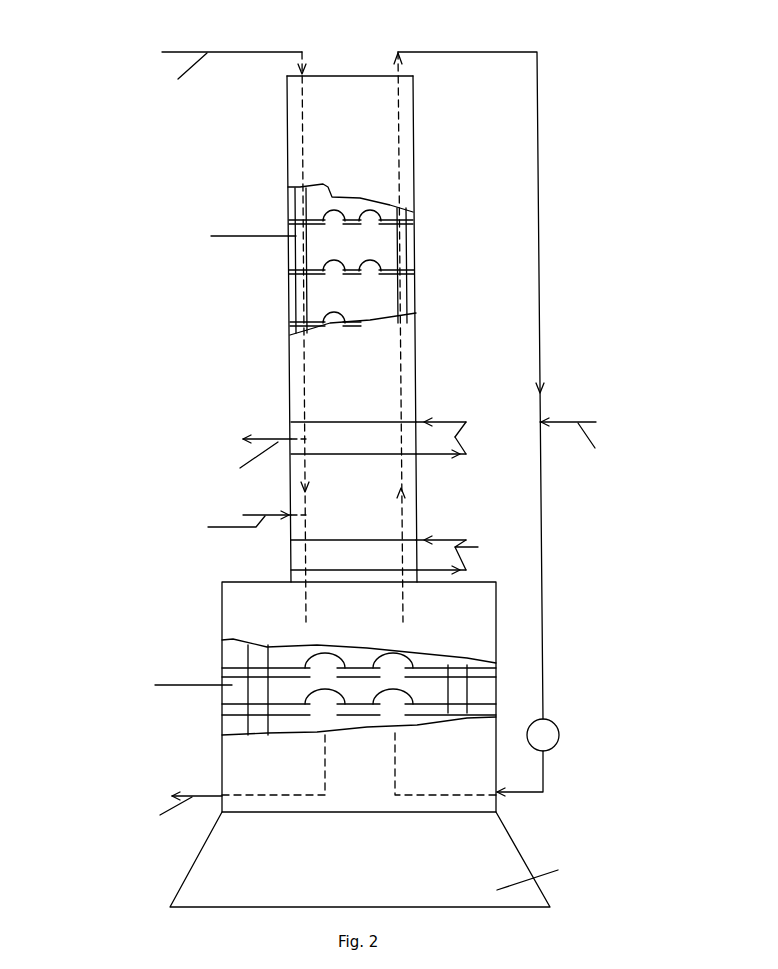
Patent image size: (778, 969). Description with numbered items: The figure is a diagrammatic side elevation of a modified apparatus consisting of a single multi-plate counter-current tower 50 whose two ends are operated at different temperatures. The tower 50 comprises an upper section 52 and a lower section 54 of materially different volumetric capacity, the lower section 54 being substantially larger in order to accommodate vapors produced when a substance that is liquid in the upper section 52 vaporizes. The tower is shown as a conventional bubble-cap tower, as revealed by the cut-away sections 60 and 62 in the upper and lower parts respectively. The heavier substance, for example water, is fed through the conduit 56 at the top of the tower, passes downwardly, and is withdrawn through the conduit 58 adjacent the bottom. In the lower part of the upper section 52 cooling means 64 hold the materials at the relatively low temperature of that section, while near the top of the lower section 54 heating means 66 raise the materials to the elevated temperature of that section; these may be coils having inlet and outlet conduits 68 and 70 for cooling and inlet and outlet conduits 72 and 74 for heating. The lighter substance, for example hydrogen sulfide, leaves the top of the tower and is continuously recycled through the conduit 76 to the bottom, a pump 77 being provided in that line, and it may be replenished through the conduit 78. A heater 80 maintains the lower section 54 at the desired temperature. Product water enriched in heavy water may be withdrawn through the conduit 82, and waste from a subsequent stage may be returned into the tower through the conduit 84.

The tower 50 is at (289, 351).
The upper section 52 is at (414, 161).
The lower section 54 is at (497, 616).
The conduit 56 is at (196, 50).
The conduit 58 is at (200, 793).
The cut-away section 60 is at (392, 216).
The cut-away section 62 is at (430, 660).
The cooling means 64 is at (353, 438).
The heating means 66 is at (354, 555).
The inlet conduit 68 is at (441, 421).
The outlet conduit 70 is at (445, 457).
The inlet conduit 72 is at (445, 539).
The outlet conduit 74 is at (440, 570).
The conduit 76 is at (541, 227).
The pump 77 is at (557, 723).
The conduit 78 is at (572, 420).
The heater 80 is at (487, 857).
The conduit 82 is at (267, 434).
The conduit 84 is at (265, 513).